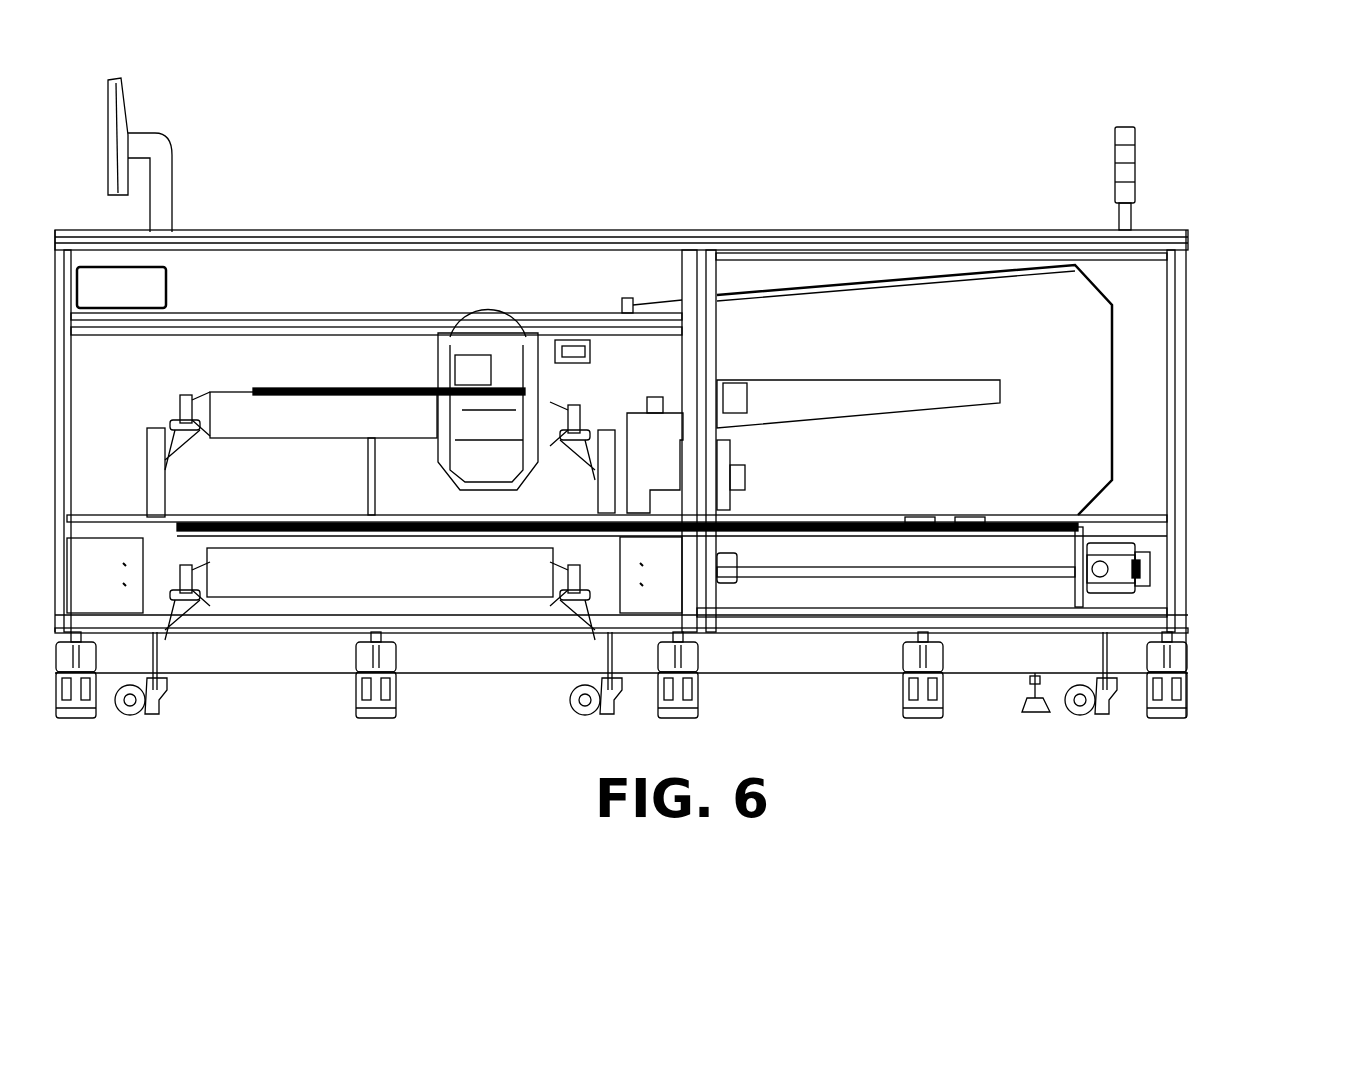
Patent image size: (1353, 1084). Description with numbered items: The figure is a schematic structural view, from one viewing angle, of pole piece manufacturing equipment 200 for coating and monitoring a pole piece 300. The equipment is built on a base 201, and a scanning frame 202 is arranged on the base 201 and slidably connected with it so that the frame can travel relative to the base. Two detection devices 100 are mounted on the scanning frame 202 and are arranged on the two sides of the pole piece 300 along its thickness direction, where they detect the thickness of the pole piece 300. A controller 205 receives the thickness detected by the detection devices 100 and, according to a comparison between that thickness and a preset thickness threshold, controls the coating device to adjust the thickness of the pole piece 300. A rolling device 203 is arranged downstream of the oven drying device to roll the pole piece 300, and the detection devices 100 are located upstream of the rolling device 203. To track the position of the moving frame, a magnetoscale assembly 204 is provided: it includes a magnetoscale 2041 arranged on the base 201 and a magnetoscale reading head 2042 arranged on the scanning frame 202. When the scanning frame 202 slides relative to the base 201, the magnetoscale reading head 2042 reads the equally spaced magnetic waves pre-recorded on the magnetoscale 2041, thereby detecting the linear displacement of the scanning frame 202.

The pole piece manufacturing equipment 200 is at (107, 79).
The base 201 is at (237, 622).
The scanning frame 202 is at (900, 325).
The rolling device 203 is at (337, 410).
The magnetoscale assembly 204 is at (1293, 333).
The magnetoscale 2041 is at (918, 517).
The magnetoscale reading head 2042 is at (1000, 517).
The controller 205 is at (122, 280).
The pole piece 300 is at (377, 438).
The detection device 100 is at (447, 337).